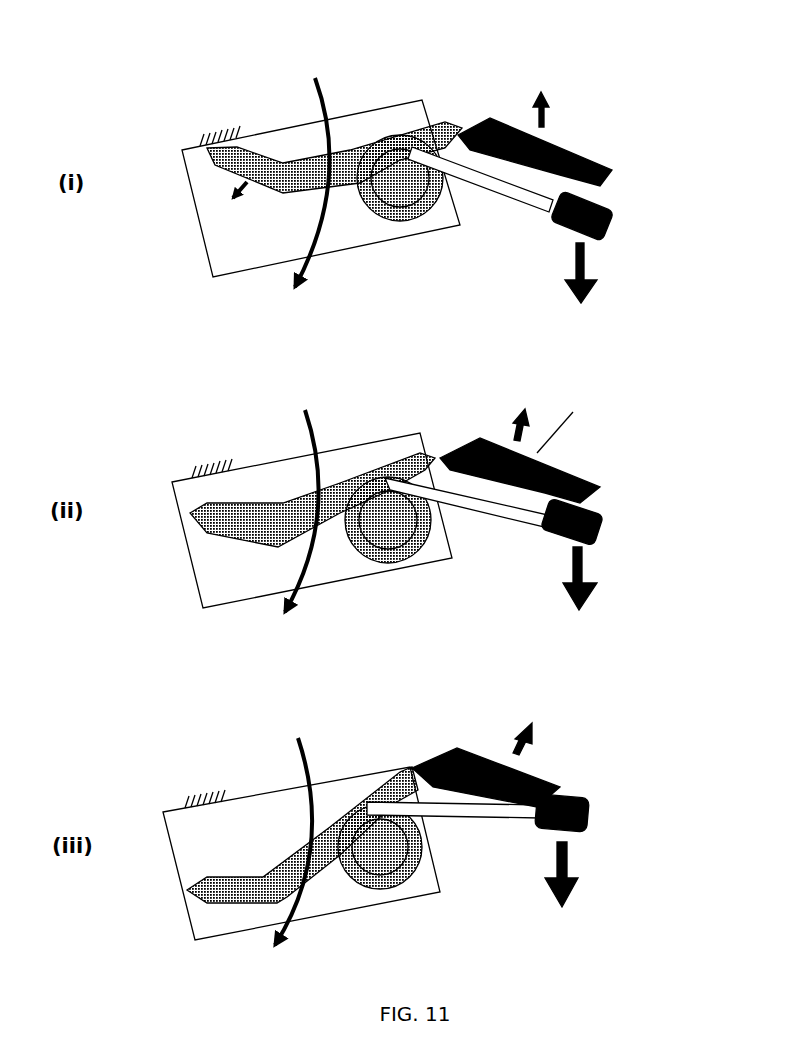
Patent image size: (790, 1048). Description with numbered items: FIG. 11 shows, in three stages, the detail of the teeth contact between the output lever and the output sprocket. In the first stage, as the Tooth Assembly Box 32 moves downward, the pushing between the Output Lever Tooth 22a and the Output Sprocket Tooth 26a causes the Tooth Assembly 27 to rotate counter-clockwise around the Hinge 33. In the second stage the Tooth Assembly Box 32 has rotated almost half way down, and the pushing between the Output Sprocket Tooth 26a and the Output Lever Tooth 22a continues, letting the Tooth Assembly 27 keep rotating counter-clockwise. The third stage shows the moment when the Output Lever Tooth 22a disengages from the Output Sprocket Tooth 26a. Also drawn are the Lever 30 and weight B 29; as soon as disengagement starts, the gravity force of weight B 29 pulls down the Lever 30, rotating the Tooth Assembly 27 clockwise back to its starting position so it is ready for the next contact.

The Output Lever Tooth 22a is at (452, 130).
The Output Sprocket Tooth 26a is at (487, 120).
The Tooth Assembly 27 is at (355, 150).
The weight B 29 is at (582, 265).
The Lever 30 is at (497, 193).
The Tooth Assembly Box 32 is at (287, 130).
The Hinge 33 is at (358, 140).